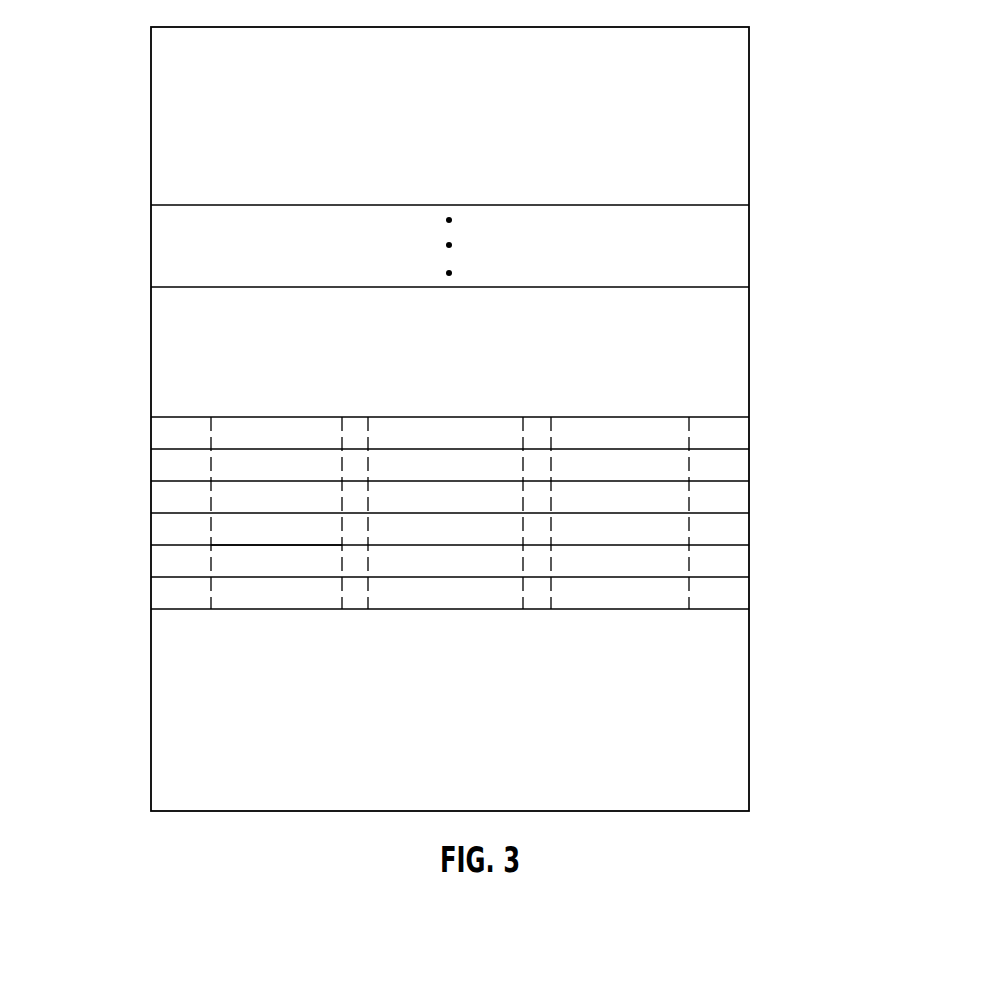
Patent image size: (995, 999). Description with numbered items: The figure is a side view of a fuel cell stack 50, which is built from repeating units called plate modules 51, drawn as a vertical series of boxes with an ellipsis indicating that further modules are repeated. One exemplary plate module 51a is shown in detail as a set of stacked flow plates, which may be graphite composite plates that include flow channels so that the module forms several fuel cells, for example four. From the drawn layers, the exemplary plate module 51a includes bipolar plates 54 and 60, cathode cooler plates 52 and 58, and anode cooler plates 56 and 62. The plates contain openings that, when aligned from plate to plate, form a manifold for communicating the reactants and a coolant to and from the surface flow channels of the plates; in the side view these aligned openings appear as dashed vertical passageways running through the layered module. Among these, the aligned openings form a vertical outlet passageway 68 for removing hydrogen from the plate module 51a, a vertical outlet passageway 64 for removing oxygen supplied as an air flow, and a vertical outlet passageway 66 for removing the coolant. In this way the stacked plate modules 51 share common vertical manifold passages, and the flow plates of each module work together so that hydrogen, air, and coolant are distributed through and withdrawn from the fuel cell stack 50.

The fuel cell stack 50 is at (880, 228).
The plate module 51 is at (749, 112).
The exemplary plate module 51a is at (453, 496).
The cathode cooler plate 52 is at (151, 595).
The bipolar plate 54 is at (151, 563).
The anode cooler plate 56 is at (151, 532).
The cathode cooler plate 58 is at (151, 500).
The bipolar plate 60 is at (151, 468).
The anode cooler plate 62 is at (151, 435).
The vertical outlet passageway 64 is at (245, 545).
The vertical outlet passageway 66 is at (439, 561).
The vertical outlet passageway 68 is at (653, 558).